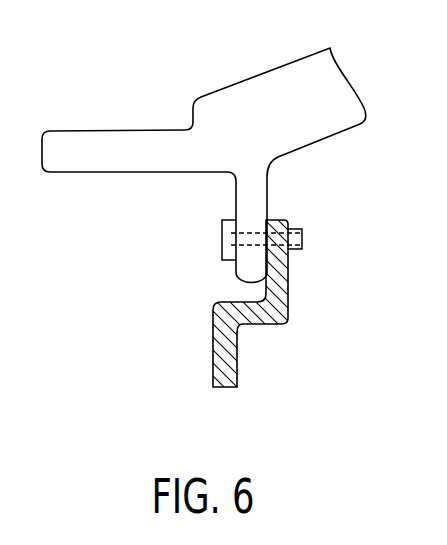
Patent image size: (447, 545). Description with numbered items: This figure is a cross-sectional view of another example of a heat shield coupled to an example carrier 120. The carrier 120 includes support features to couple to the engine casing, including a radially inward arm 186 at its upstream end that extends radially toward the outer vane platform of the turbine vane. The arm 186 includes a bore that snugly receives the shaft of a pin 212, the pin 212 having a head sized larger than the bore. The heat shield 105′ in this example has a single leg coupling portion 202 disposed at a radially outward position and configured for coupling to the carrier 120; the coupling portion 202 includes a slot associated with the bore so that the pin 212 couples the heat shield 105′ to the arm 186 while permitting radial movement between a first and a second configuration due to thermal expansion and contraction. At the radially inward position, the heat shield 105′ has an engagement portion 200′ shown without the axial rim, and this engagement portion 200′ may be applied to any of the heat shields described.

The carrier 120 is at (275, 82).
The radially inward arm 186 is at (250, 183).
The heat shield 105′ is at (279, 314).
The engagement portion 200′ is at (223, 390).
The pin 212 is at (225, 246).
The coupling portion 202 is at (280, 226).